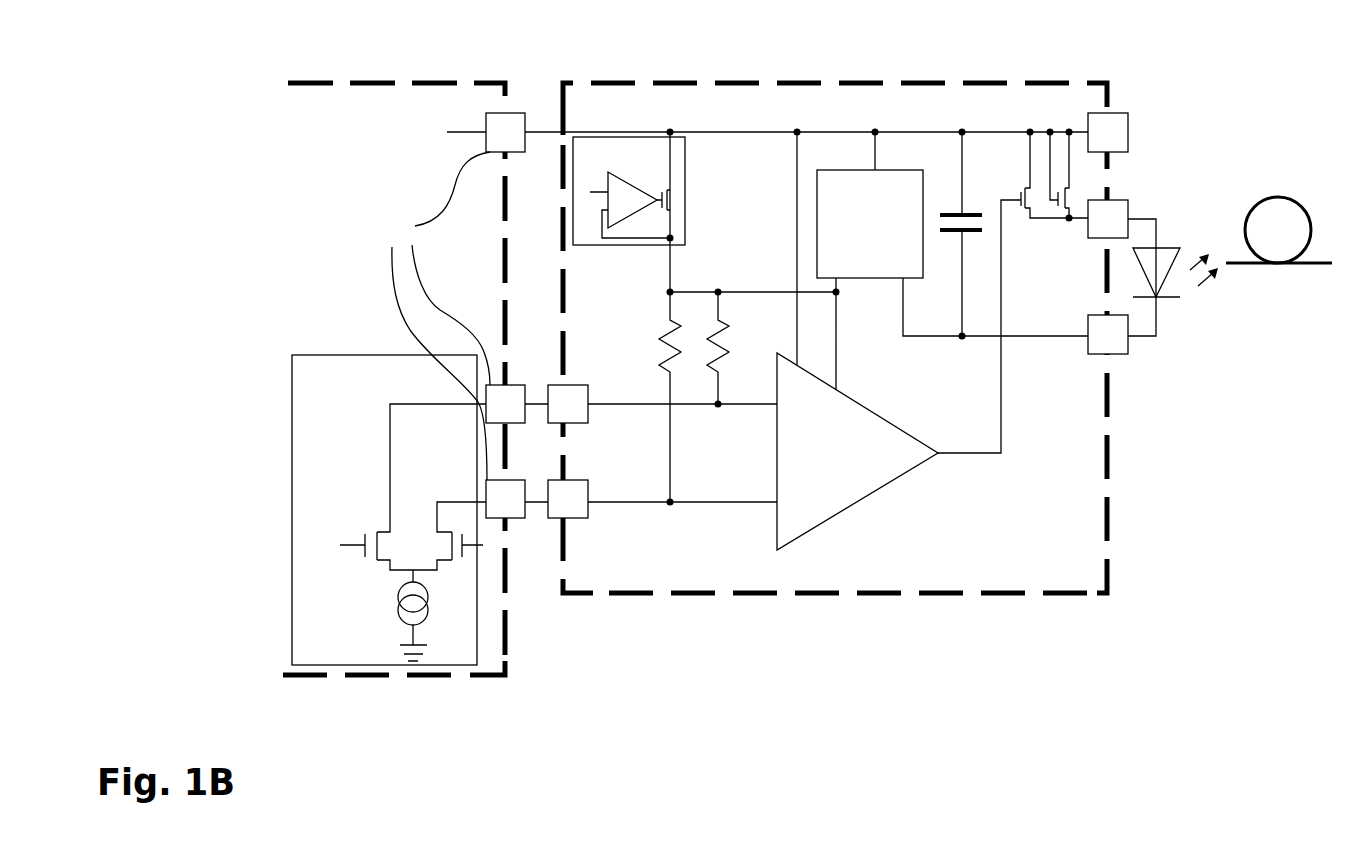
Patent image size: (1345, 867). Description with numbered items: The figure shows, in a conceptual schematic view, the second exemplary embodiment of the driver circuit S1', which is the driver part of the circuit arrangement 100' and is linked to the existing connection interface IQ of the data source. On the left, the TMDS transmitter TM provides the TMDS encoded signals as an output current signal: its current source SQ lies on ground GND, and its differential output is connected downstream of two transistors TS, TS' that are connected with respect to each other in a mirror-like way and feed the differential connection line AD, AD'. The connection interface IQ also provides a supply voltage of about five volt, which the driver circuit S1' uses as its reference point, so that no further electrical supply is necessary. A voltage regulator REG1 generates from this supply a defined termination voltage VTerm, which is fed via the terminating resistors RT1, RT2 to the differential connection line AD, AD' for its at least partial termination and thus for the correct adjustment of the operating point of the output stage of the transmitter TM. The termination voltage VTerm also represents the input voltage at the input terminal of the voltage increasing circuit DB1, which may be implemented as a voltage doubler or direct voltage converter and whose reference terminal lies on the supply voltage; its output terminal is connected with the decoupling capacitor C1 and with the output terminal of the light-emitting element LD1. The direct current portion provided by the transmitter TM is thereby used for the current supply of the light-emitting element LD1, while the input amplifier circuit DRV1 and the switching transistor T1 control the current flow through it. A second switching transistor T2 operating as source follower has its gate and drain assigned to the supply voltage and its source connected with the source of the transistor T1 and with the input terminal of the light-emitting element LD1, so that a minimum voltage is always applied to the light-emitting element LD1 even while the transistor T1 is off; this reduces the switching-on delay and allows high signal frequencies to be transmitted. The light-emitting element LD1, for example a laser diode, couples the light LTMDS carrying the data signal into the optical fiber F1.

The circuit arrangement 100' is at (1177, 165).
The TMDS transmitter TM is at (389, 510).
The connection interface of the data source IQ is at (440, 316).
The differential connection line AD is at (631, 375).
The differential connection line AD' is at (631, 531).
The transistor TS is at (376, 557).
The transistor TS' is at (448, 557).
The current source SQ is at (394, 607).
The ground GND is at (386, 653).
The voltage regulator REG1 is at (629, 211).
The termination voltage VTerm is at (753, 283).
The terminating resistor RT1 is at (654, 399).
The terminating resistor RT2 is at (737, 350).
The voltage increasing circuit DB1 is at (952, 260).
The decoupling capacitor C1 is at (966, 234).
The input amplifier circuit DRV1 is at (899, 340).
The switching transistor T1 is at (1042, 175).
The switching transistor T2 is at (1072, 174).
The light-emitting element LD1 is at (1166, 247).
The light LTMDS is at (1215, 282).
The optical fiber F1 is at (1279, 230).
The driver circuit S1' is at (625, 566).